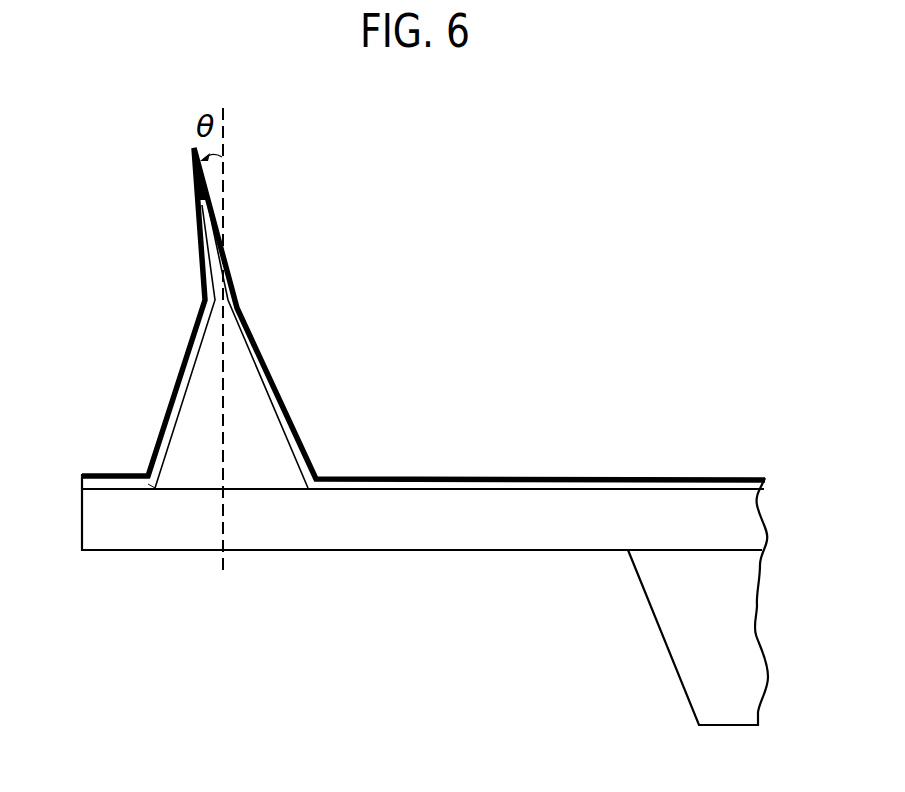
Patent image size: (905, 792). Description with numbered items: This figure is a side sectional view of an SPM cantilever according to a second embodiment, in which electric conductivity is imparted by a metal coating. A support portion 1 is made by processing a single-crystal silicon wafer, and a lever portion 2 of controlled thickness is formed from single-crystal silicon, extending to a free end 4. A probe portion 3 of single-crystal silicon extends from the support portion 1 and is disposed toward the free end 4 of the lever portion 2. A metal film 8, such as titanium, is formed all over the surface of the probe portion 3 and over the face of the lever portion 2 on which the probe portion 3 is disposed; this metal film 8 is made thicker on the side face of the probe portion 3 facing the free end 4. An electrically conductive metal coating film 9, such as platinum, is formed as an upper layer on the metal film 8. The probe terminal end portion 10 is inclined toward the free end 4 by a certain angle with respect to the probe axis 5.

The support portion 1 is at (735, 625).
The lever portion 2 is at (540, 527).
The probe portion 3 is at (260, 415).
The free end 4 is at (95, 520).
The probe axis 5 is at (228, 185).
The metal film 8 is at (385, 487).
The electrically conductive metal coating film 9 is at (458, 478).
The probe terminal end portion 10 is at (198, 185).